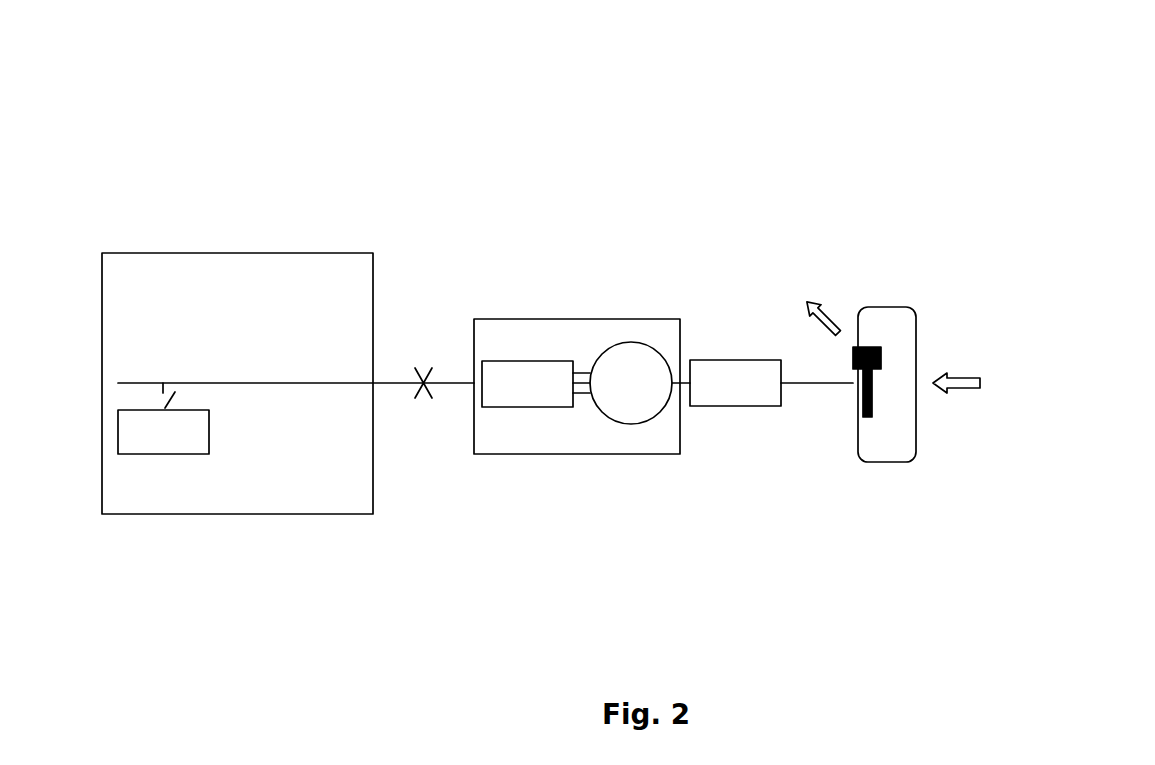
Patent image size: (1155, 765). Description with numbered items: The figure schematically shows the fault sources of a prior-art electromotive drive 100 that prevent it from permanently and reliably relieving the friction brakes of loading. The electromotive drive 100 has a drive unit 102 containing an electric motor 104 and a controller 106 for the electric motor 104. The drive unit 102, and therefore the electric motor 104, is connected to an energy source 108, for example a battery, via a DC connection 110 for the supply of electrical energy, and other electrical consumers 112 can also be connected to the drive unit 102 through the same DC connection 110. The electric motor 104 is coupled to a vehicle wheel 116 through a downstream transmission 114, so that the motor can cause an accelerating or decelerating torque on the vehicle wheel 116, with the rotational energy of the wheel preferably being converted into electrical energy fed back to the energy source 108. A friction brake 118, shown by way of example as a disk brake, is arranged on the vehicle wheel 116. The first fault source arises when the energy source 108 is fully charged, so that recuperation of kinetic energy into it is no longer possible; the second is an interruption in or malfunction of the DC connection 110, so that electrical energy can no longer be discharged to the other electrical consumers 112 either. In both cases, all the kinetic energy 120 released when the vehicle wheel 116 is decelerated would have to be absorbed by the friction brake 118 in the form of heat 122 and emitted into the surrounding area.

The electromotive drive 100 is at (880, 158).
The drive unit 102 is at (576, 319).
The electric motor 104 is at (622, 392).
The controller 106 is at (541, 388).
The energy source 108 is at (158, 435).
The DC connection 110 is at (443, 383).
The other electrical consumers 112 is at (267, 253).
The transmission 114 is at (748, 390).
The vehicle wheel 116 is at (877, 443).
The friction brake 118 is at (875, 347).
The kinetic energy 120 is at (970, 377).
The heat 122 is at (822, 300).